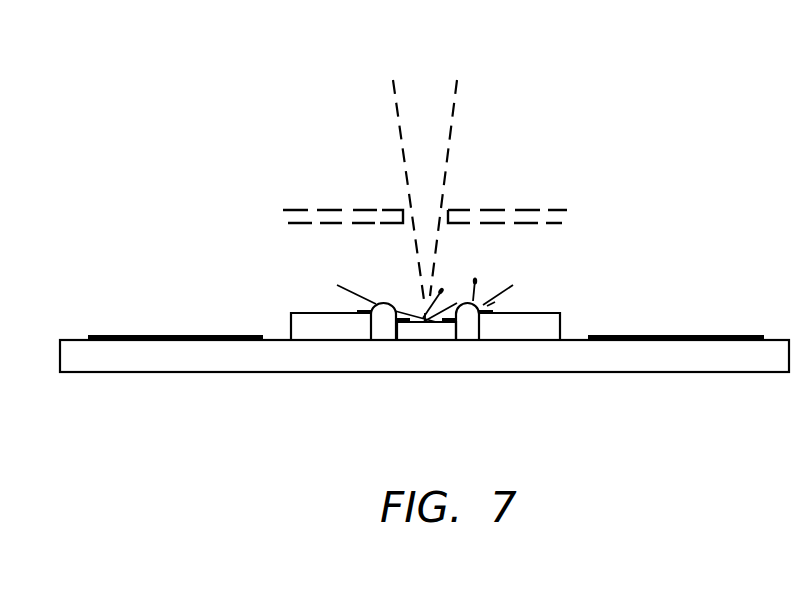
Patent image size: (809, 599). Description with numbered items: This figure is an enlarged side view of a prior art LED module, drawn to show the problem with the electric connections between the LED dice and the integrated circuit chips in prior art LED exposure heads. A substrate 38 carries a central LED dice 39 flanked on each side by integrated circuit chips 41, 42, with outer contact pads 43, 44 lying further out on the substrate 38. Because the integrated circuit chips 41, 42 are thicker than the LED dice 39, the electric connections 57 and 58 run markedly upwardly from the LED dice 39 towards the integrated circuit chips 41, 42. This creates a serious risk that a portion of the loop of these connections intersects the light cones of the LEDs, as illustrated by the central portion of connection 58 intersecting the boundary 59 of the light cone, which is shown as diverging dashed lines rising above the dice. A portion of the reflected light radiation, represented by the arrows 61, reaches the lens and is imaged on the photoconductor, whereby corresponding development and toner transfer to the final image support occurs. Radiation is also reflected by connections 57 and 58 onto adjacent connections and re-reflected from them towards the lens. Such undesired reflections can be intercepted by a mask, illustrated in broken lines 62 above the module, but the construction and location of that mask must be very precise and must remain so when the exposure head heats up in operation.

The substrate 38 is at (142, 363).
The LED dice 39 is at (423, 330).
The integrated circuit chip 41 is at (330, 330).
The integrated circuit chip 42 is at (528, 330).
The contact pad 43 is at (137, 335).
The contact pad 44 is at (692, 334).
The electric connection 57 is at (381, 302).
The electric connection 58 is at (487, 306).
The boundary of the light cone 59 is at (503, 287).
The arrows 61 is at (457, 303).
The mask 62 is at (292, 210).